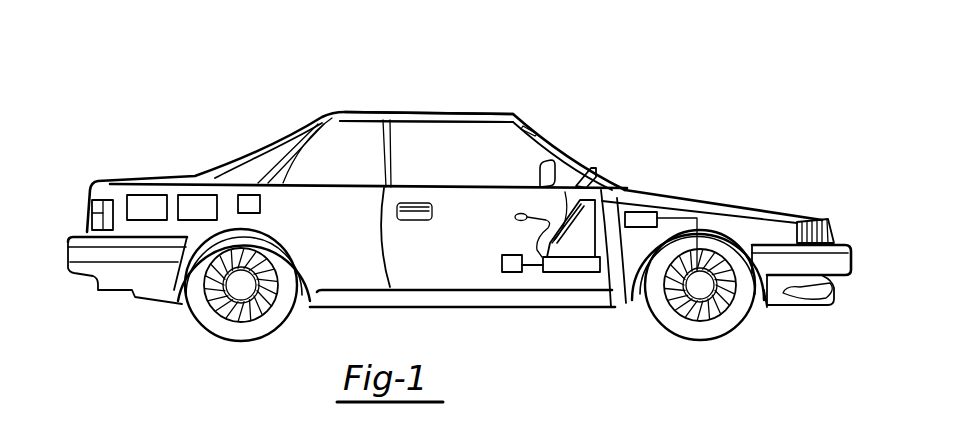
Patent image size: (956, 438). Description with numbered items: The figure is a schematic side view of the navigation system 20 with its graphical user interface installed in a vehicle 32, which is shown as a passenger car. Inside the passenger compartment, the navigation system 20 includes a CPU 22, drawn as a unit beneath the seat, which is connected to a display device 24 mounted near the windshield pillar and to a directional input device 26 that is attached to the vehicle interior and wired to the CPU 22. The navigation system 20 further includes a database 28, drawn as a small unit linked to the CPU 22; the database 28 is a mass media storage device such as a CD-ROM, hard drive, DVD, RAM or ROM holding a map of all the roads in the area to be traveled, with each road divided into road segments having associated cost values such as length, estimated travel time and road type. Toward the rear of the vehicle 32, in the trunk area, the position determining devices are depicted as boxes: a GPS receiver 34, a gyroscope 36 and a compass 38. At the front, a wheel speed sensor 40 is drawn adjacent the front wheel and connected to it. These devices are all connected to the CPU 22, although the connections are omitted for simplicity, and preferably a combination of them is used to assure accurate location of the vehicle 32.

The navigation system 20 is at (197, 68).
The CPU 22 is at (567, 273).
The display device 24 is at (565, 192).
The directional input device 26 is at (520, 213).
The database 28 is at (507, 272).
The vehicle 32 is at (424, 102).
The GPS receiver 34 is at (143, 195).
The gyroscope 36 is at (192, 195).
The compass 38 is at (248, 195).
The wheel speed sensor 40 is at (640, 212).